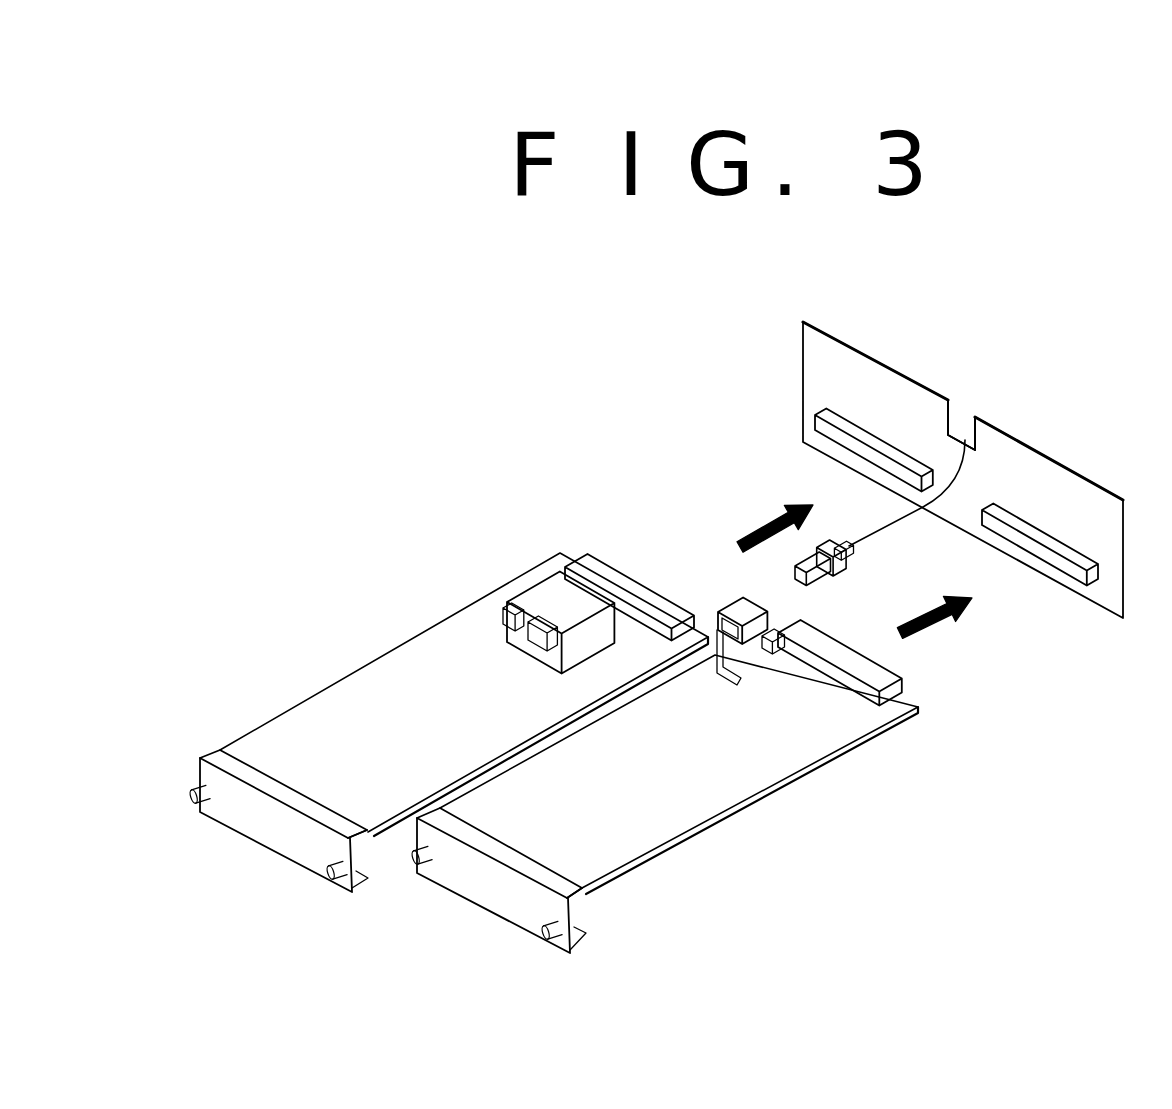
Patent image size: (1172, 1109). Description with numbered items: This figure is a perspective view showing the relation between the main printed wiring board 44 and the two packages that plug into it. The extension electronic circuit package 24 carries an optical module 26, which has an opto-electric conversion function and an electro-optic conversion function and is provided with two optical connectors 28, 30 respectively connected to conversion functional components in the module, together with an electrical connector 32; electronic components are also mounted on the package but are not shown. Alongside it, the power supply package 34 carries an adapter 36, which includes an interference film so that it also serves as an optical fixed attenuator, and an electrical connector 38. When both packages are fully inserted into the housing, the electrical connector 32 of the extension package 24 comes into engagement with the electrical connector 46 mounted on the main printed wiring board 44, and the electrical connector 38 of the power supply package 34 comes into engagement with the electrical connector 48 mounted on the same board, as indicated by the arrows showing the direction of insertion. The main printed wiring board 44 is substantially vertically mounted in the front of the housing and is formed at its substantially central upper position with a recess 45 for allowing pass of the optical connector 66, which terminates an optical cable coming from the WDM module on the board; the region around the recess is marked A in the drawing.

The extension electronic circuit package 24 is at (325, 710).
The optical module 26 is at (538, 590).
The optical connector 28 is at (538, 640).
The optical connector 30 is at (508, 620).
The electrical connector 32 is at (588, 562).
The power supply package 34 is at (700, 802).
The adapter 36 is at (736, 600).
The electrical connector 38 is at (890, 672).
The main printed wiring board 44 is at (889, 394).
The recess 45 is at (958, 418).
The electrical connector 46 is at (814, 427).
The electrical connector 48 is at (1084, 572).
The optical connector 66 is at (858, 565).
The region A is at (1002, 397).